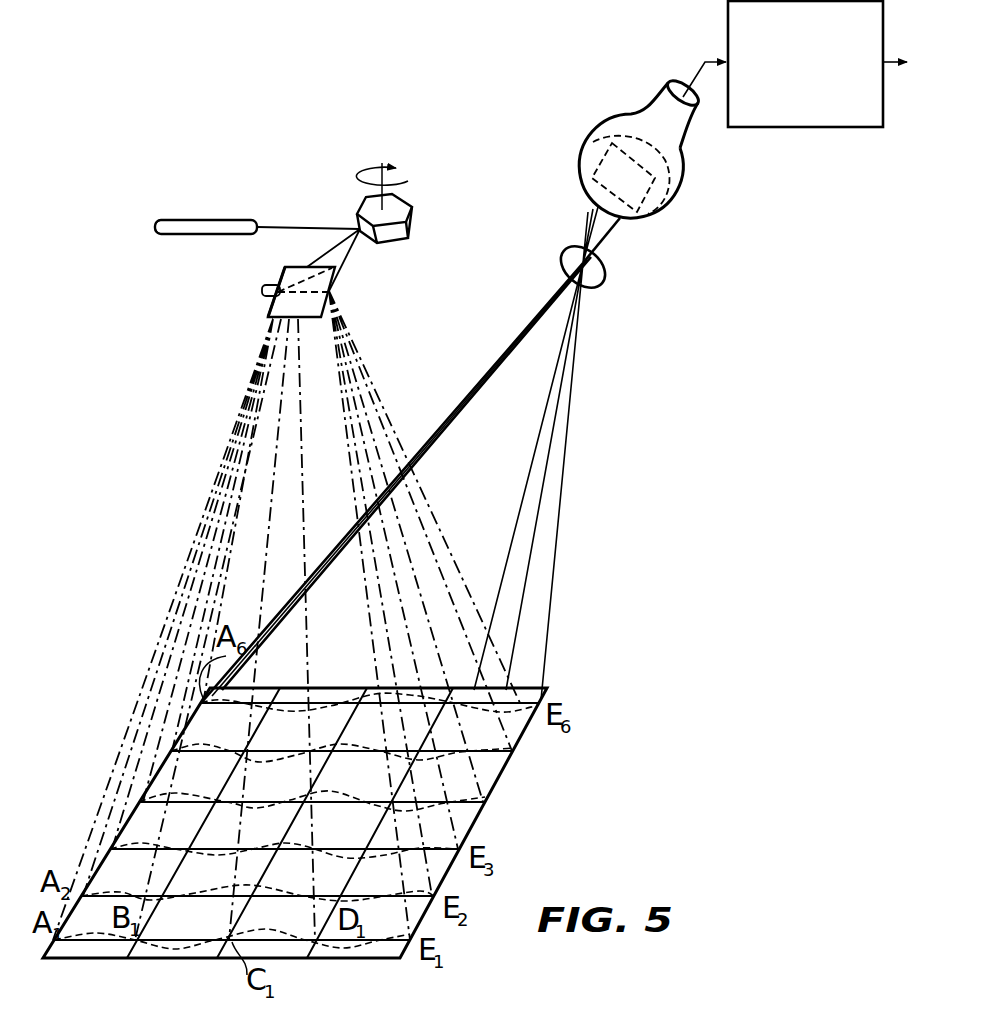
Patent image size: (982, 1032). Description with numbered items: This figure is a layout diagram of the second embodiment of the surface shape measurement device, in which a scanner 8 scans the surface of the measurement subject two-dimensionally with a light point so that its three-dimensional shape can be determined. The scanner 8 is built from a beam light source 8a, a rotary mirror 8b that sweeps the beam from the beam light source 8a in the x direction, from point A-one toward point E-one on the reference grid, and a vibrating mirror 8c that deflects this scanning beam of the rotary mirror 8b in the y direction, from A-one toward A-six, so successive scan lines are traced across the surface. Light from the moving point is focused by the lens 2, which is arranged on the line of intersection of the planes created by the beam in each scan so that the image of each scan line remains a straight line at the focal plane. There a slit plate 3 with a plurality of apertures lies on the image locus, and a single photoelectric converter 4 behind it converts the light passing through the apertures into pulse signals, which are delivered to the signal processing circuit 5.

The lens 2 is at (600, 283).
The slit plate 3 is at (668, 199).
The photoelectric converter 4 is at (603, 128).
The signal processing circuit 5 is at (773, 128).
The scanner 8 is at (247, 278).
The beam light source 8a is at (212, 222).
The rotary mirror 8b is at (413, 206).
The vibrating mirror 8c is at (275, 305).